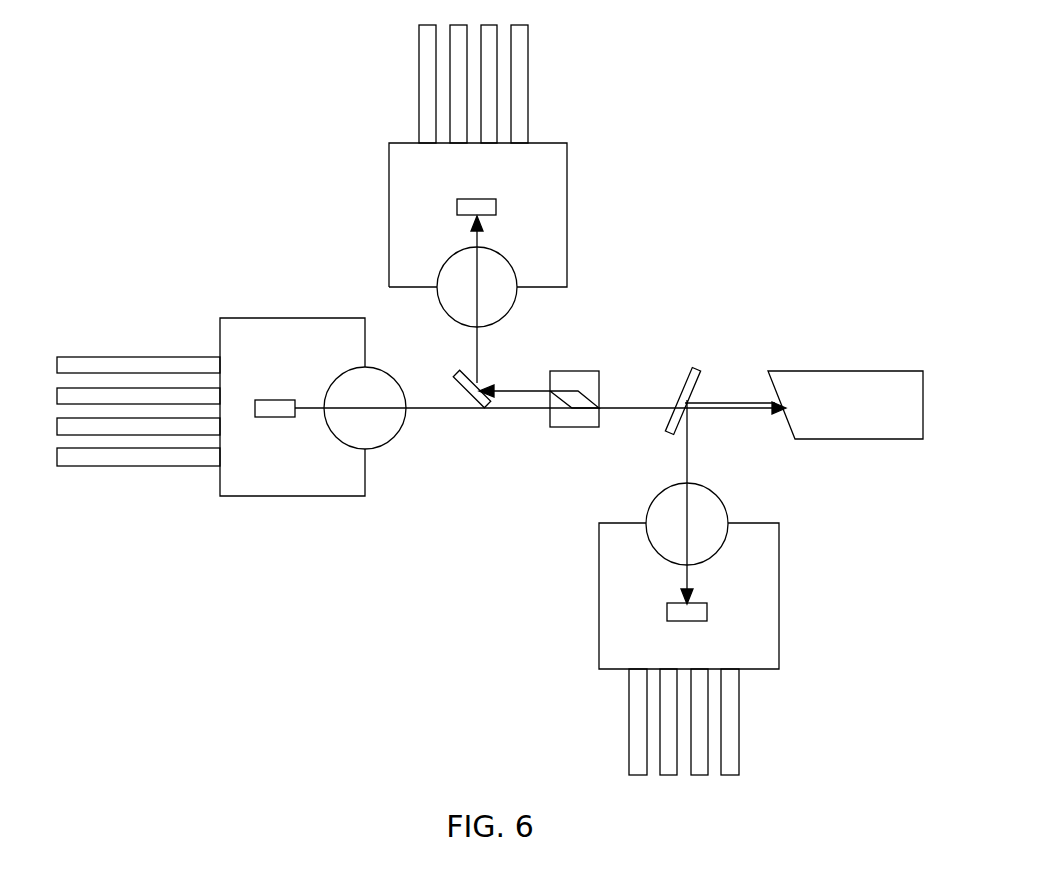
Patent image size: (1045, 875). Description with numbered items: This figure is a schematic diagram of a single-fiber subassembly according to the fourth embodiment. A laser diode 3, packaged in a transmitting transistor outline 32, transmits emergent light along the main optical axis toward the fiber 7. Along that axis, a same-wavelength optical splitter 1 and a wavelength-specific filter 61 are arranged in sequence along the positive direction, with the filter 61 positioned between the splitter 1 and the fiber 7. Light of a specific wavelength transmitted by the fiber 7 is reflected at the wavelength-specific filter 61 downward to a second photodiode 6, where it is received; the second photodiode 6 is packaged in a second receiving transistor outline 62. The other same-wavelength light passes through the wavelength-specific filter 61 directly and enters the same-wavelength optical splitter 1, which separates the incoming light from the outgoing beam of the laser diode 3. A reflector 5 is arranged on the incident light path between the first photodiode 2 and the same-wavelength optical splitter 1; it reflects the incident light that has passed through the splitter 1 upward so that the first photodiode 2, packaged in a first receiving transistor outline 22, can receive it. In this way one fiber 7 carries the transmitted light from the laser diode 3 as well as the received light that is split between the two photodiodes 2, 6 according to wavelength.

The same-wavelength optical splitter 1 is at (604, 326).
The first photodiode 2 is at (557, 125).
The first receiving transistor outline 22 is at (524, 176).
The laser diode 3 is at (196, 487).
The transmitting transistor outline 32 is at (231, 353).
The reflector 5 is at (405, 472).
The second photodiode 6 is at (766, 541).
The wavelength-specific filter 61 is at (721, 334).
The second receiving transistor outline 62 is at (736, 629).
The fiber 7 is at (845, 336).